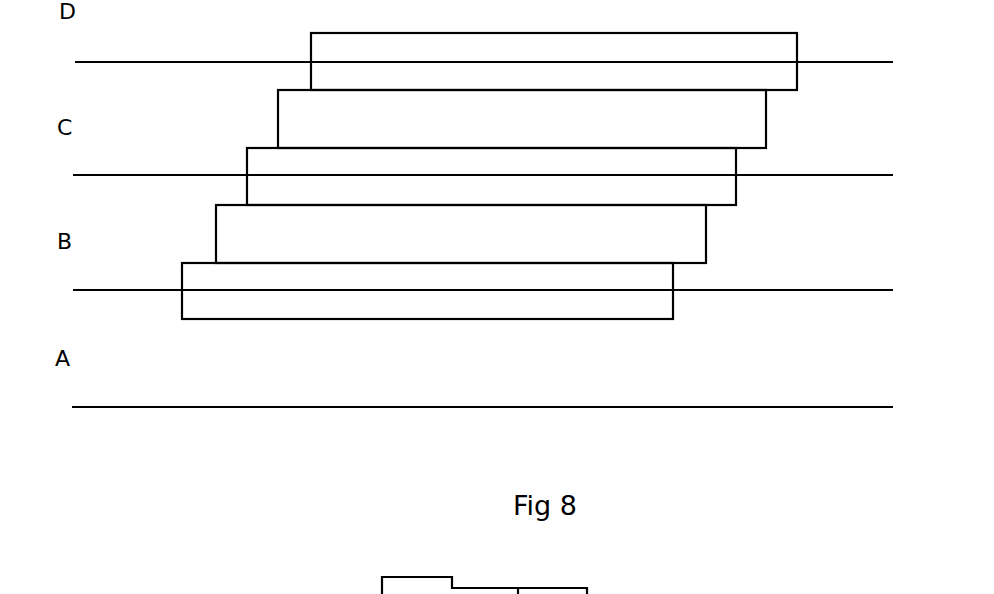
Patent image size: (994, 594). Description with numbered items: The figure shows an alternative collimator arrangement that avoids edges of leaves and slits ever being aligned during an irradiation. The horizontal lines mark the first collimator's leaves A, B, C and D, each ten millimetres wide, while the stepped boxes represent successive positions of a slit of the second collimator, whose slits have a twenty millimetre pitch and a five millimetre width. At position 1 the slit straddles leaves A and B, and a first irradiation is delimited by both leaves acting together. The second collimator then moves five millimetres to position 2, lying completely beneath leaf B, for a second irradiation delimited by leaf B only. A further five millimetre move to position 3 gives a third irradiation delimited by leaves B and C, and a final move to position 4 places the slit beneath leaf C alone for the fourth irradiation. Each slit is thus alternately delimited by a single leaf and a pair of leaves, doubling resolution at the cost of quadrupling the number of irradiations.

The position 1 is at (427, 291).
The position 2 is at (461, 234).
The position 3 is at (491, 176).
The position 4 is at (522, 119).